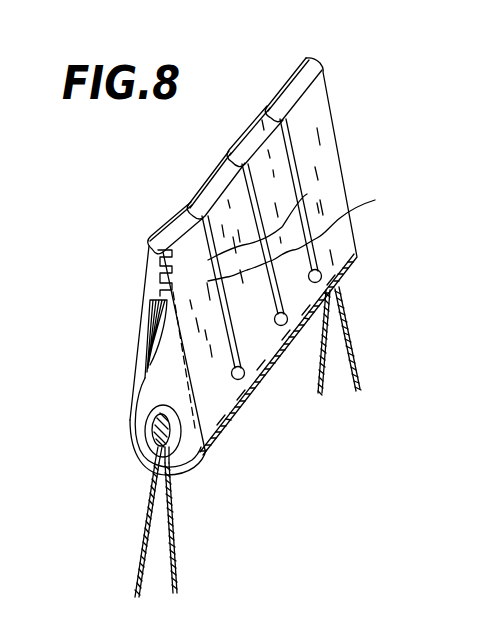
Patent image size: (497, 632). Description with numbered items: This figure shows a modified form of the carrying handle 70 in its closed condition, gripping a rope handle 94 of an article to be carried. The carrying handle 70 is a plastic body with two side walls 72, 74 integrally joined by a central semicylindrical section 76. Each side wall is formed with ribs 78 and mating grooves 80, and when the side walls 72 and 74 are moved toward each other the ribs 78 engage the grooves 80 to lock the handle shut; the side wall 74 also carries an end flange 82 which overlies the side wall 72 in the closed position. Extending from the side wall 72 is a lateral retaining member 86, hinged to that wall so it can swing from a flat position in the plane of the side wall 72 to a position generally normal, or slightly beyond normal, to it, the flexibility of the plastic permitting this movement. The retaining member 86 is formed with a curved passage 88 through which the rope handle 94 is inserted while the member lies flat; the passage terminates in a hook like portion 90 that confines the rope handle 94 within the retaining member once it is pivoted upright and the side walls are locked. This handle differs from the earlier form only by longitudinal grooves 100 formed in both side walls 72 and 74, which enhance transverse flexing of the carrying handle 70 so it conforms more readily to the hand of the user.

The carrying handle 70 is at (343, 90).
The side wall 72 is at (325, 138).
The side wall 74 is at (142, 333).
The central semicylindrical section 76 is at (137, 456).
The ribs 78 is at (172, 272).
The grooves 80 is at (175, 294).
The end flange 82 is at (212, 182).
The lateral retaining member 86 is at (158, 368).
The curved passage 88 is at (149, 398).
The hook like portion 90 is at (172, 441).
The rope handle 94 is at (138, 553).
The longitudinal grooves 100 is at (307, 194).